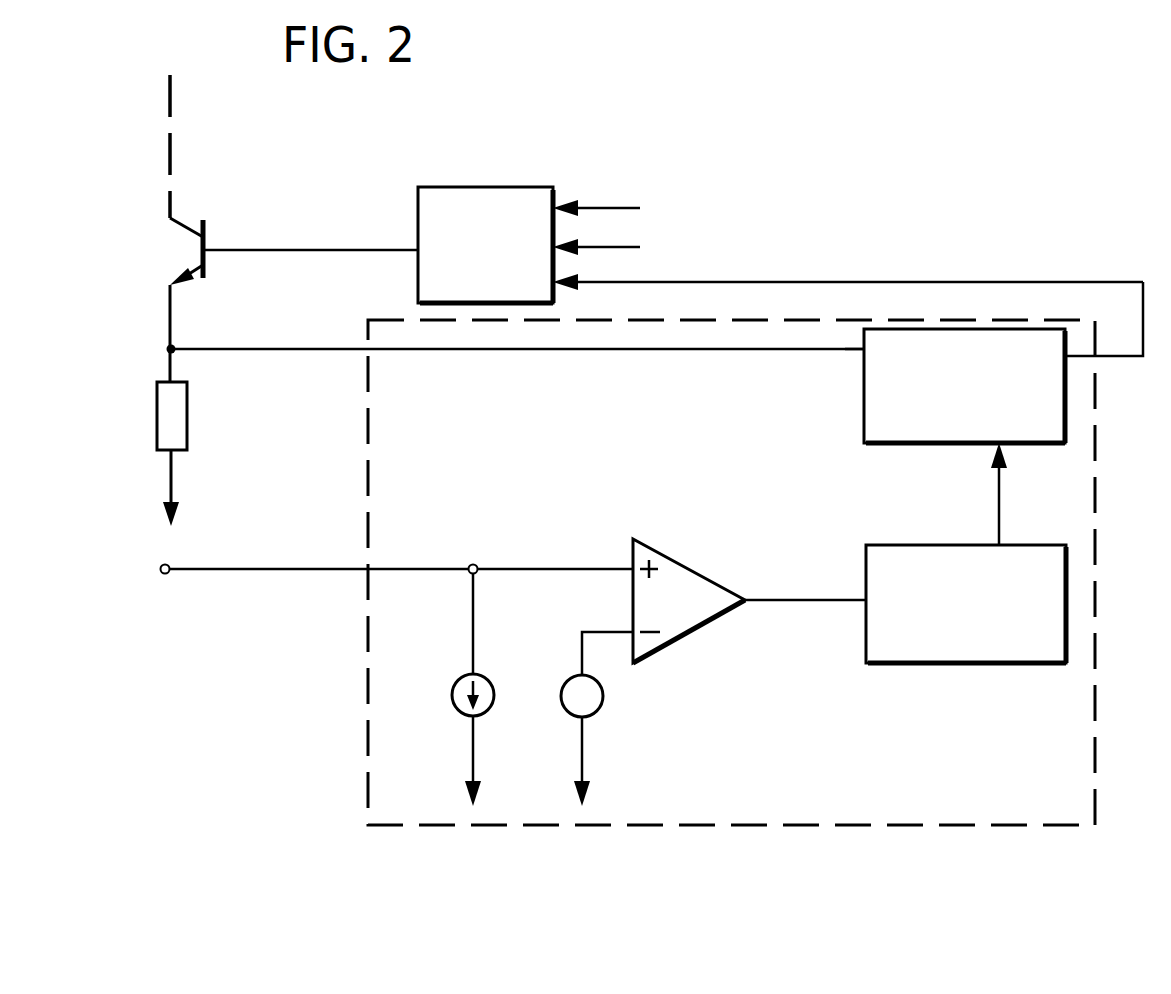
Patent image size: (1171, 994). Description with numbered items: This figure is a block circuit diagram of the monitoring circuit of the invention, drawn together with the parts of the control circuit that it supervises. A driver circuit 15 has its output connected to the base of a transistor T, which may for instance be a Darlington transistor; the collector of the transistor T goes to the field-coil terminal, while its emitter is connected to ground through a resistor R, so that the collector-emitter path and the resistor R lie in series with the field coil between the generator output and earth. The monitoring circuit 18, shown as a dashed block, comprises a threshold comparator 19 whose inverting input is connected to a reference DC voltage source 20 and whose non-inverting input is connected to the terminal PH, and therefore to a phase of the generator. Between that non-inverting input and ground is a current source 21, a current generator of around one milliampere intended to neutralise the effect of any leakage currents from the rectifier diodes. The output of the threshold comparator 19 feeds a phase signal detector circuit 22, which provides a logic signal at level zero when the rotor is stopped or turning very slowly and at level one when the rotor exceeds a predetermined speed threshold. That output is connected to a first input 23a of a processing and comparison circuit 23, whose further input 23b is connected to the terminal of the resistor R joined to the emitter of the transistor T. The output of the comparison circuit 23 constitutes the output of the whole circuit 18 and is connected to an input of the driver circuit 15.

The driver circuit 15 is at (518, 196).
The circuit 18 is at (368, 457).
The threshold comparator 19 is at (673, 578).
The reference DC voltage source 20 is at (593, 703).
The current source 21 is at (460, 690).
The phase signal detector circuit 22 is at (957, 653).
The processing and comparison circuit 23 is at (982, 337).
The first input 23a is at (995, 446).
The further input 23b is at (864, 349).
The transistor T is at (205, 246).
The resistor R is at (162, 415).
The terminal PH is at (165, 574).